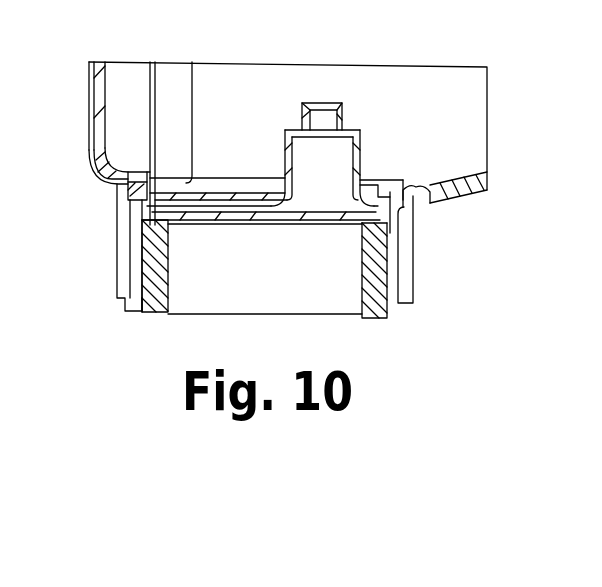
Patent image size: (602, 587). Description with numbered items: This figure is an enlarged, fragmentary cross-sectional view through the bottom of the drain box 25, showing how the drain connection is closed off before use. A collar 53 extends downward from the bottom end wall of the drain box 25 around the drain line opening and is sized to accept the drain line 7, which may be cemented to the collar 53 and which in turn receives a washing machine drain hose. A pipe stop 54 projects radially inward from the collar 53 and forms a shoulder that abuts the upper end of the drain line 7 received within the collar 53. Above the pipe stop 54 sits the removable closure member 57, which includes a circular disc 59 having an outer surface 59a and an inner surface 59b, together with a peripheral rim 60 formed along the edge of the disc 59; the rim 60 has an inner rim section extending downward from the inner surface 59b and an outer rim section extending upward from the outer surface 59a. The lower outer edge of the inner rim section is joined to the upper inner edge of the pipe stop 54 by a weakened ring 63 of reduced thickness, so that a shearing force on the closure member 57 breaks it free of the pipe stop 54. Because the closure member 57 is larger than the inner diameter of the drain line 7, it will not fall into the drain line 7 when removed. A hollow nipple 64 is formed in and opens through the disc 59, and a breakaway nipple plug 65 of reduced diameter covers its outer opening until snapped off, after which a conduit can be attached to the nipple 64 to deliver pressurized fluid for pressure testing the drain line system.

The drain box 25 is at (505, 118).
The closure member 57 is at (183, 190).
The peripheral rim 60 is at (143, 210).
The weakened ring 63 is at (147, 215).
The drain line 7 is at (140, 308).
The hollow nipple 64 is at (284, 156).
The breakaway nipple plug 65 is at (318, 107).
The circular disc 59 is at (250, 204).
The outer surface 59a is at (226, 206).
The inner surface 59b is at (228, 212).
The pipe stop 54 is at (384, 222).
The collar 53 is at (413, 258).